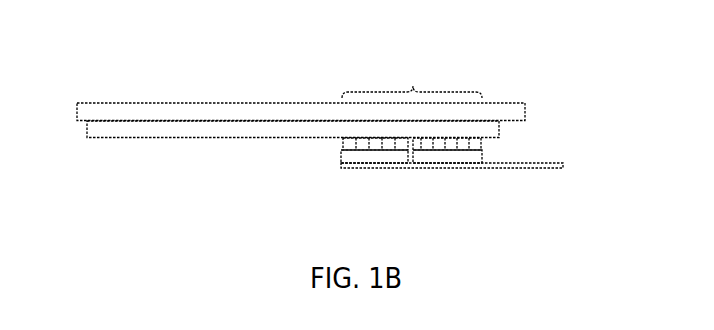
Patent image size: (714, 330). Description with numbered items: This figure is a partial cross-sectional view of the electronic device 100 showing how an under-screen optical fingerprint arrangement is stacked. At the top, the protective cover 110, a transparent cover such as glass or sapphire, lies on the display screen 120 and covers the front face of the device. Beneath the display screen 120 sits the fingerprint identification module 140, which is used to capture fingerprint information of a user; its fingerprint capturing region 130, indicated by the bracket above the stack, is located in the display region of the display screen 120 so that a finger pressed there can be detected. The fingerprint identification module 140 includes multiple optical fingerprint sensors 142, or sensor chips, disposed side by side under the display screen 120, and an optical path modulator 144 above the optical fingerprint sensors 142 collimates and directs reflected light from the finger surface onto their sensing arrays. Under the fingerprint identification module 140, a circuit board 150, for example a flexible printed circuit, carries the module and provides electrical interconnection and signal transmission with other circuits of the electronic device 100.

The electronic device 100 is at (348, 128).
The protective cover 110 is at (500, 102).
The display screen 120 is at (313, 138).
The fingerprint capturing region 130 is at (412, 76).
The fingerprint identification module 140 is at (456, 167).
The optical fingerprint sensors 142 is at (370, 160).
The optical path modulator 144 is at (463, 143).
The circuit board 150 is at (535, 166).